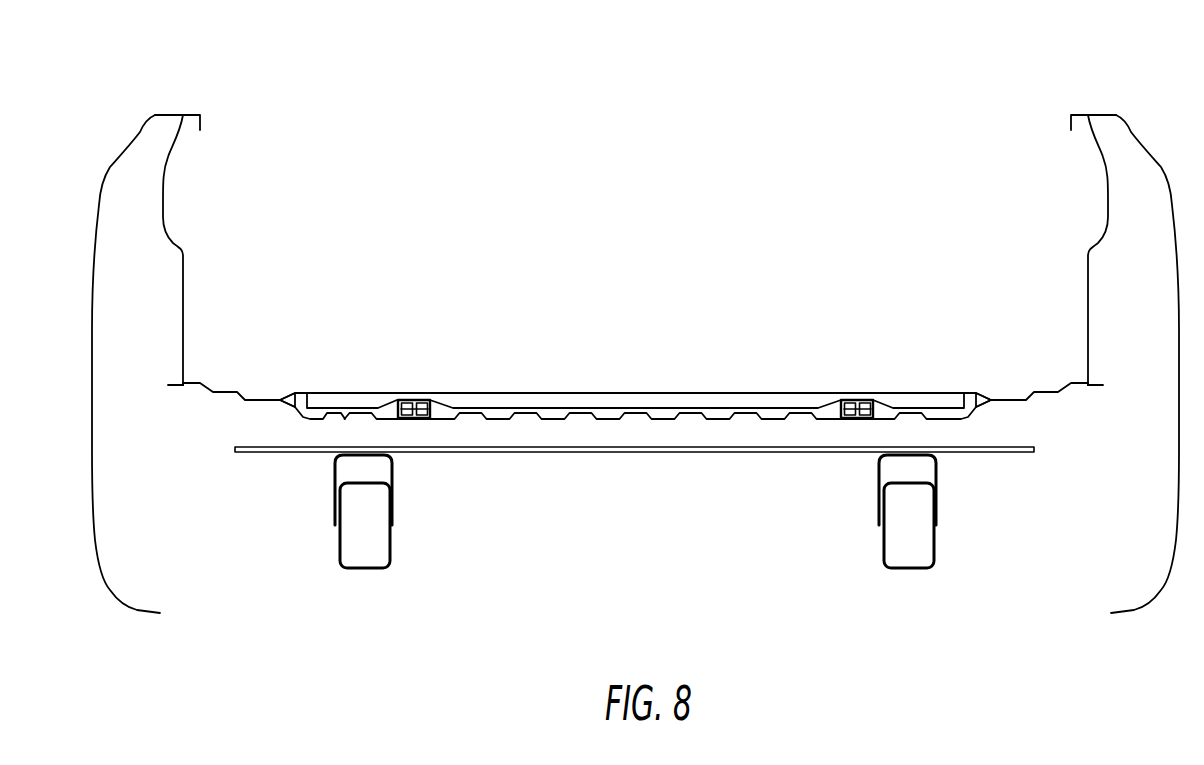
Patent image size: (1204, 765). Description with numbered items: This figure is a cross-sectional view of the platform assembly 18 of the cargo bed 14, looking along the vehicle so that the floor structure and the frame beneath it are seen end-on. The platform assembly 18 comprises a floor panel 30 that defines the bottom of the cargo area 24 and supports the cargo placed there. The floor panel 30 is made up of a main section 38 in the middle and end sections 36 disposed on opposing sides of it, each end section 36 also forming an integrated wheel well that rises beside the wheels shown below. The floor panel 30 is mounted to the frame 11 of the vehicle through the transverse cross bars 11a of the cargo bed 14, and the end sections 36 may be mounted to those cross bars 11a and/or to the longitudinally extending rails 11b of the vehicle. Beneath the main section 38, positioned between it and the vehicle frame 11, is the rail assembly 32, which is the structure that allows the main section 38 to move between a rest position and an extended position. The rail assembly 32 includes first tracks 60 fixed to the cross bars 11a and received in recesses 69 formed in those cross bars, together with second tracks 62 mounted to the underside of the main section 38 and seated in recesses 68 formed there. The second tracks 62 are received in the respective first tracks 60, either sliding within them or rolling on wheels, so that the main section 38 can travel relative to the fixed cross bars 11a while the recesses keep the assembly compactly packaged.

The frame 11 is at (653, 560).
The cross bars 11a is at (663, 440).
The longitudinally extending rails 11b is at (335, 543).
The cargo bed 14 is at (952, 100).
The platform assembly 18 is at (642, 410).
The cargo area 24 is at (618, 210).
The floor panel 30 is at (741, 392).
The rail assembly 32 is at (447, 421).
The end sections 36 is at (298, 393).
The main section 38 is at (505, 393).
The first tracks 60 is at (422, 419).
The second tracks 62 is at (426, 400).
The recesses 68 is at (881, 392).
The recesses 69 is at (877, 426).